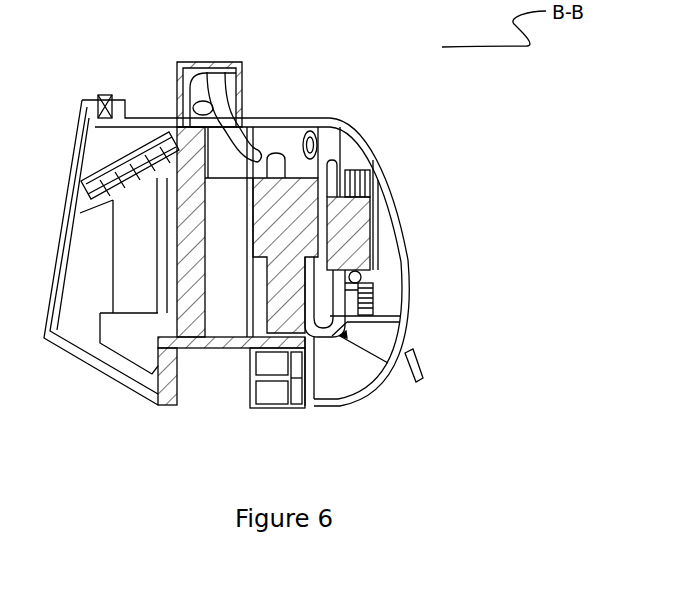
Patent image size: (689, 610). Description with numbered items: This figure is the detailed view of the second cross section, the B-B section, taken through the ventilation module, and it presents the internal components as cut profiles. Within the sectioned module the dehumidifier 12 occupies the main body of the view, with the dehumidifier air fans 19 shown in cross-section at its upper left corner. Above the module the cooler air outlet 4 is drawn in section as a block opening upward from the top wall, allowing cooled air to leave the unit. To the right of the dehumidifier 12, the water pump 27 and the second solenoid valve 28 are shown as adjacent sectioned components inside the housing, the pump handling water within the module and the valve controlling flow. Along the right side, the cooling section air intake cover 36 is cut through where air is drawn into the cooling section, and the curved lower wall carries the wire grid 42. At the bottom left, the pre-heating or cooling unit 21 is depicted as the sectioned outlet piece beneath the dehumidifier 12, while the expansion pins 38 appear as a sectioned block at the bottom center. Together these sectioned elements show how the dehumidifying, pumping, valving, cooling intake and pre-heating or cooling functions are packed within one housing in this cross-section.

The cooler air outlet 4 is at (224, 76).
The dehumidifier 12 is at (182, 240).
The dehumidifier air fans 19 is at (100, 100).
The pre-heating or cooling unit 21 is at (138, 349).
The water pump 27 is at (273, 210).
The second solenoid valve 28 is at (340, 217).
The cooling section air intake cover 36 is at (352, 348).
The expansion pins 38 is at (297, 408).
The wire grid 42 is at (380, 397).